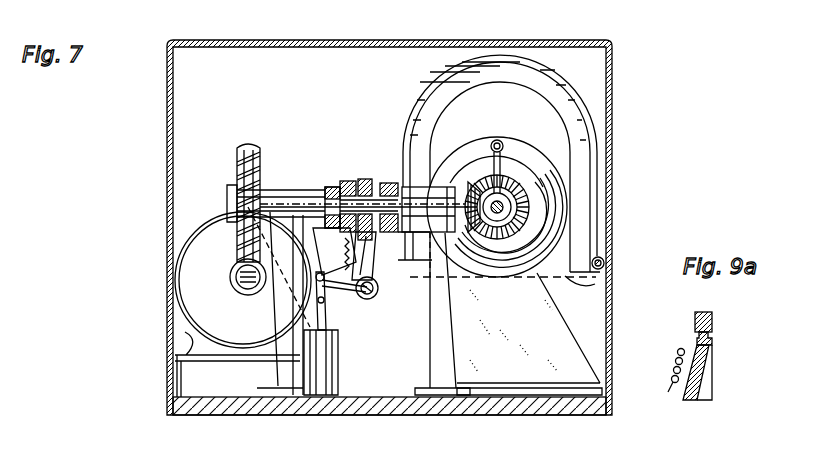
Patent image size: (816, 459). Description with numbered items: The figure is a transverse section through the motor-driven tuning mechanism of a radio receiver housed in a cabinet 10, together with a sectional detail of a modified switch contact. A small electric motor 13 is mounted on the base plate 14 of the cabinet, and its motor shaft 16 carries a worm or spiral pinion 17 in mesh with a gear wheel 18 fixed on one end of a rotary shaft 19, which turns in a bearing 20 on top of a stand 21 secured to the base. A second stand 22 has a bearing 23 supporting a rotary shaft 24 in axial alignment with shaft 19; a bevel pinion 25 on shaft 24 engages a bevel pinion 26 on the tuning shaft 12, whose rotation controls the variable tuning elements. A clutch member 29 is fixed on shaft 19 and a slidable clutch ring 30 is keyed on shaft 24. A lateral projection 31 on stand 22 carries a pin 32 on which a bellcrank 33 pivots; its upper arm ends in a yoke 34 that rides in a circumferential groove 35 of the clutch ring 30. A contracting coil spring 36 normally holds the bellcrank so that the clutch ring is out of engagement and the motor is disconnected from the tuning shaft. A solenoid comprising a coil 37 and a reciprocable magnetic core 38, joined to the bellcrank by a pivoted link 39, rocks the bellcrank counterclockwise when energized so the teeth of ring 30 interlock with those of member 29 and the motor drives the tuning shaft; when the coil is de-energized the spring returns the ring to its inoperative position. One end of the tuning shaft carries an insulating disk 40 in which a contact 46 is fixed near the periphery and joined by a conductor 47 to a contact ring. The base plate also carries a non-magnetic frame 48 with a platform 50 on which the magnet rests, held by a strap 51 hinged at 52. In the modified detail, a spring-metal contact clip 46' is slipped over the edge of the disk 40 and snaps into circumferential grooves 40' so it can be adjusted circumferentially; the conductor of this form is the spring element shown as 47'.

In FIG. 7, the cabinet 10 is at (268, 42).
In FIG. 7, the tuning shaft 12 is at (500, 204).
In FIG. 7, the electric motor 13 is at (243, 280).
In FIG. 7, the base plate 14 is at (256, 414).
In FIG. 7, the motor shaft 16 is at (244, 292).
In FIG. 7, the worm or spiral pinion 17 is at (256, 292).
In FIG. 7, the gear wheel 18 is at (250, 142).
In FIG. 7, the rotary shaft 19 is at (328, 193).
In FIG. 7, the bearing 20 is at (300, 185).
In FIG. 7, the stand 21 is at (278, 373).
In FIG. 7, the second stand 22 is at (442, 336).
In FIG. 7, the bearing 23 is at (417, 194).
In FIG. 7, the rotary shaft 24 is at (400, 160).
In FIG. 7, the bevel pinion 25 is at (472, 184).
In FIG. 7, the bevel pinion 26 is at (528, 211).
In FIG. 7, the clutch member 29 is at (350, 180).
In FIG. 7, the slidable clutch ring 30 is at (366, 178).
In FIG. 7, the lateral projection 31 is at (372, 298).
In FIG. 7, the pin 32 is at (370, 300).
In FIG. 7, the bellcrank 33 is at (353, 254).
In FIG. 7, the yoke 34 is at (364, 256).
In FIG. 7, the circumferential groove 35 is at (388, 182).
In FIG. 7, the contracting coil spring 36 is at (330, 260).
In FIG. 7, the coil 37 is at (321, 362).
In FIG. 7, the reciprocable magnetic core 38 is at (326, 315).
In FIG. 7, the pivoted link 39 is at (330, 283).
In FIG. 7, the insulating disk 40 is at (543, 207).
In FIG. 9a, the insulating disk 40 is at (716, 372).
In FIG. 7, the contact 46 is at (497, 168).
In FIG. 7, the conductor 47 is at (511, 152).
In FIG. 7, the non-magnetic frame 48 is at (529, 334).
In FIG. 7, the platform 50 is at (588, 284).
In FIG. 7, the strap 51 is at (596, 70).
In FIG. 7, the hinge 52 is at (605, 263).
In FIG. 9a, the circumferential grooves 40' is at (706, 329).
In FIG. 9a, the contact clip 46' is at (727, 321).
In FIG. 9a, the spring 47' is at (657, 371).